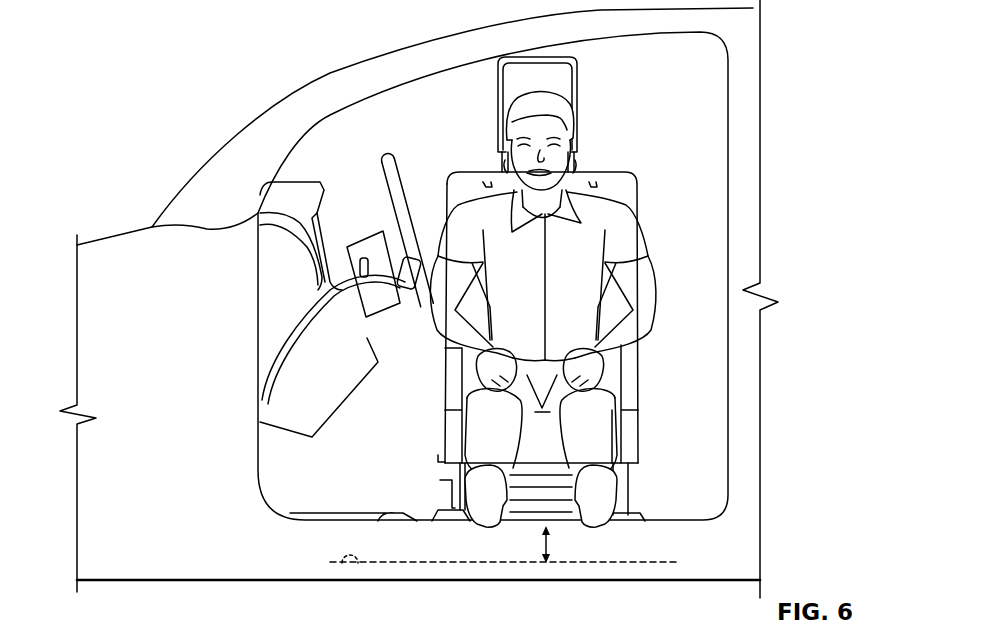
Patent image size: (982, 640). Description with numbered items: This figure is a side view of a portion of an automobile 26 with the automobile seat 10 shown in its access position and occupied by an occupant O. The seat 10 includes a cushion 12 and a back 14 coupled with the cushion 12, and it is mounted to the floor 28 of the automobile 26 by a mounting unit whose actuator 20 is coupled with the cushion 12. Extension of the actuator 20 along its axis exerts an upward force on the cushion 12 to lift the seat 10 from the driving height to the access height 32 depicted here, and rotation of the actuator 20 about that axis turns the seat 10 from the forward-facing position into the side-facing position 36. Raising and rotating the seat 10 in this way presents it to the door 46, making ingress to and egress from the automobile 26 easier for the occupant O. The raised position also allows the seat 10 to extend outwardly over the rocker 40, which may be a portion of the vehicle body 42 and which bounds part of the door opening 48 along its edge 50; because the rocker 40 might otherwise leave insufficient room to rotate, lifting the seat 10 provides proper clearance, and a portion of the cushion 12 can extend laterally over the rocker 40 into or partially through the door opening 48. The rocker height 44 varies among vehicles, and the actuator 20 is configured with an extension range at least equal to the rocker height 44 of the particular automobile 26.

The actuator 20 is at (419, 299).
The automobile 26 is at (122, 151).
The door 46 is at (437, 77).
The door opening 48 is at (447, 108).
The automobile seat 10 is at (614, 156).
The occupant O is at (615, 232).
The back 14 is at (632, 377).
The side-facing position 36 is at (637, 428).
The cushion 12 is at (565, 289).
The access height 32 is at (420, 452).
The rocker 40 is at (473, 537).
The vehicle body 42 is at (197, 563).
The rocker height 44 is at (548, 545).
The edge 50 is at (399, 523).
The floor 28 is at (356, 563).